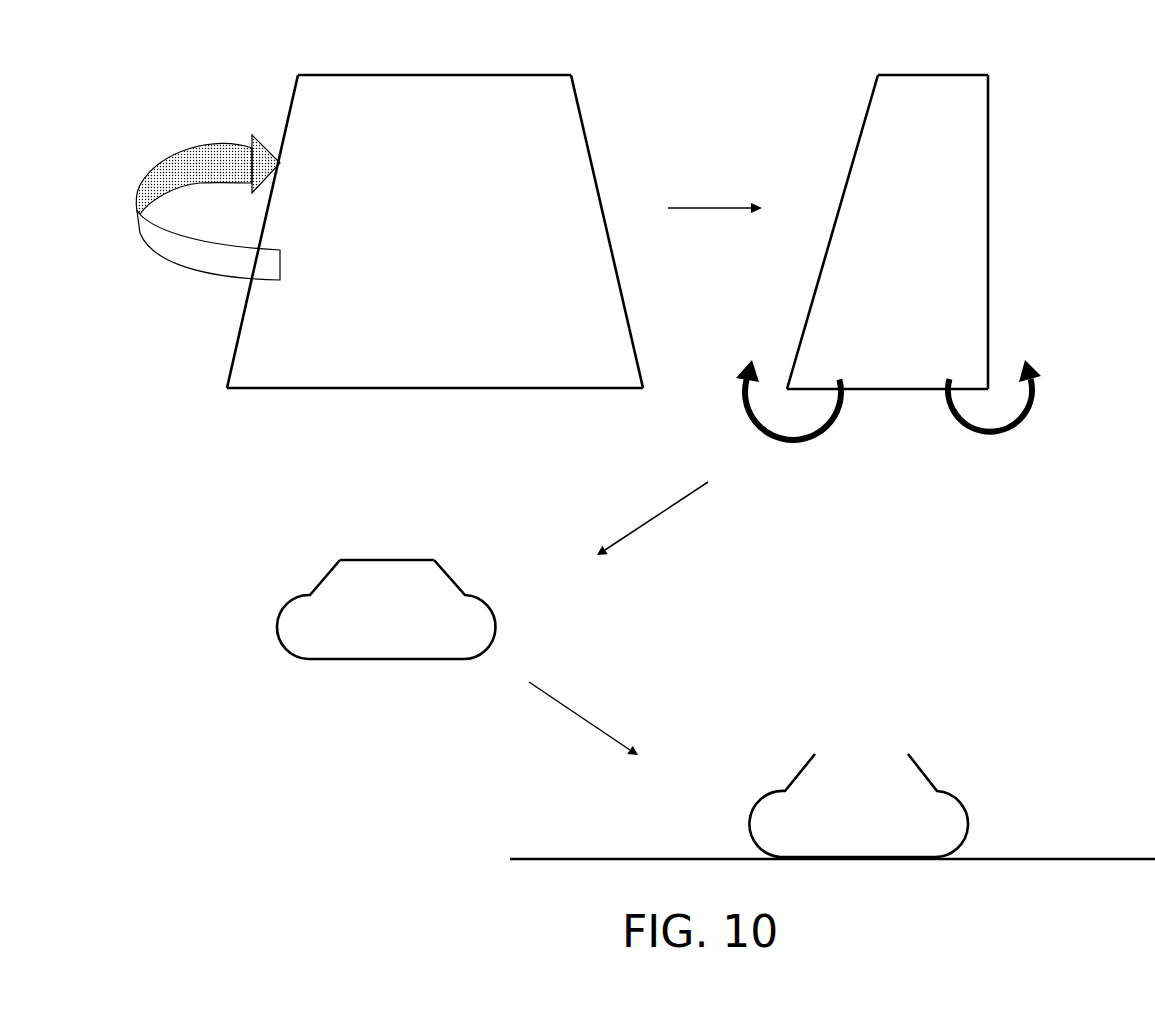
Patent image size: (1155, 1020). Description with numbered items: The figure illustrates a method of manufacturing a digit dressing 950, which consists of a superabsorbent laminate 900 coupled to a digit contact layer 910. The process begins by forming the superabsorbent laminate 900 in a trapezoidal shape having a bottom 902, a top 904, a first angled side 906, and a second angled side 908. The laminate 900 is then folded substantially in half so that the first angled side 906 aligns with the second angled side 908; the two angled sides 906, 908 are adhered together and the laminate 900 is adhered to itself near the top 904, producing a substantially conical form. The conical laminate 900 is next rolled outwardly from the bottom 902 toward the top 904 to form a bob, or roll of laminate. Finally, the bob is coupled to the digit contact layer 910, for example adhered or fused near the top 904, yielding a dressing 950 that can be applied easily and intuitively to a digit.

The superabsorbent laminate 900 is at (354, 52).
The bottom 902 is at (384, 390).
The top 904 is at (486, 75).
The first angled side 906 is at (238, 334).
The second angled side 908 is at (632, 322).
The digit contact layer 910 is at (561, 858).
The digit dressing 950 is at (831, 800).